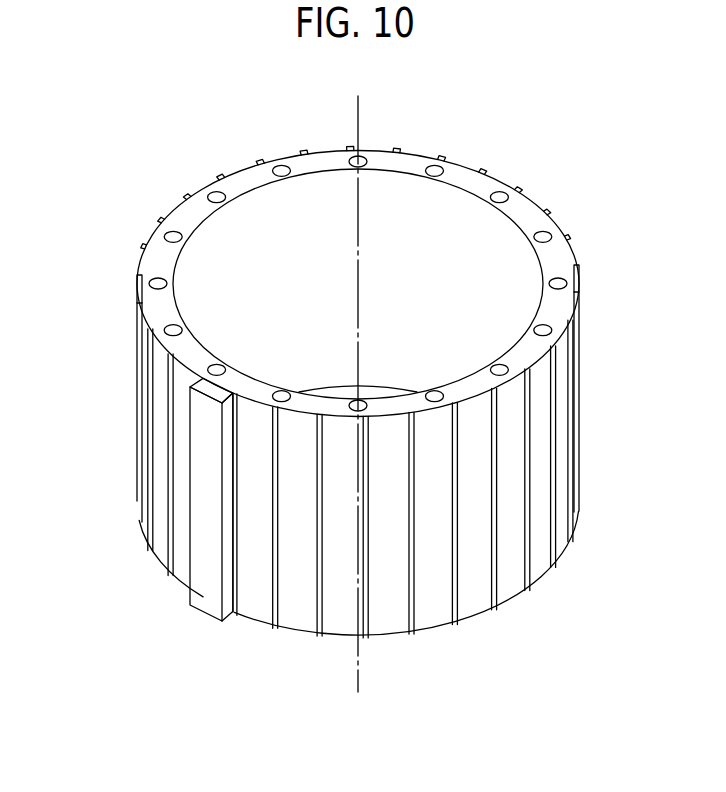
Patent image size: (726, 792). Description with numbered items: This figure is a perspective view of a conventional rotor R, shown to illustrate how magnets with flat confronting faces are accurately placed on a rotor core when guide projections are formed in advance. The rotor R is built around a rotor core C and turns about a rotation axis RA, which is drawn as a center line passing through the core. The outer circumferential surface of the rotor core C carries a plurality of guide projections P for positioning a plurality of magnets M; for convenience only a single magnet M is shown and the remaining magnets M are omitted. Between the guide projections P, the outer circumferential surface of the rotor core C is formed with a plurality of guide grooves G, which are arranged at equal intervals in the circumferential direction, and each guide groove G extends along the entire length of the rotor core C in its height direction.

The rotor R is at (125, 248).
The rotation axis RA is at (359, 114).
The rotor core C is at (463, 180).
The guide projection P is at (157, 550).
The guide groove G is at (185, 562).
The magnet M is at (207, 590).